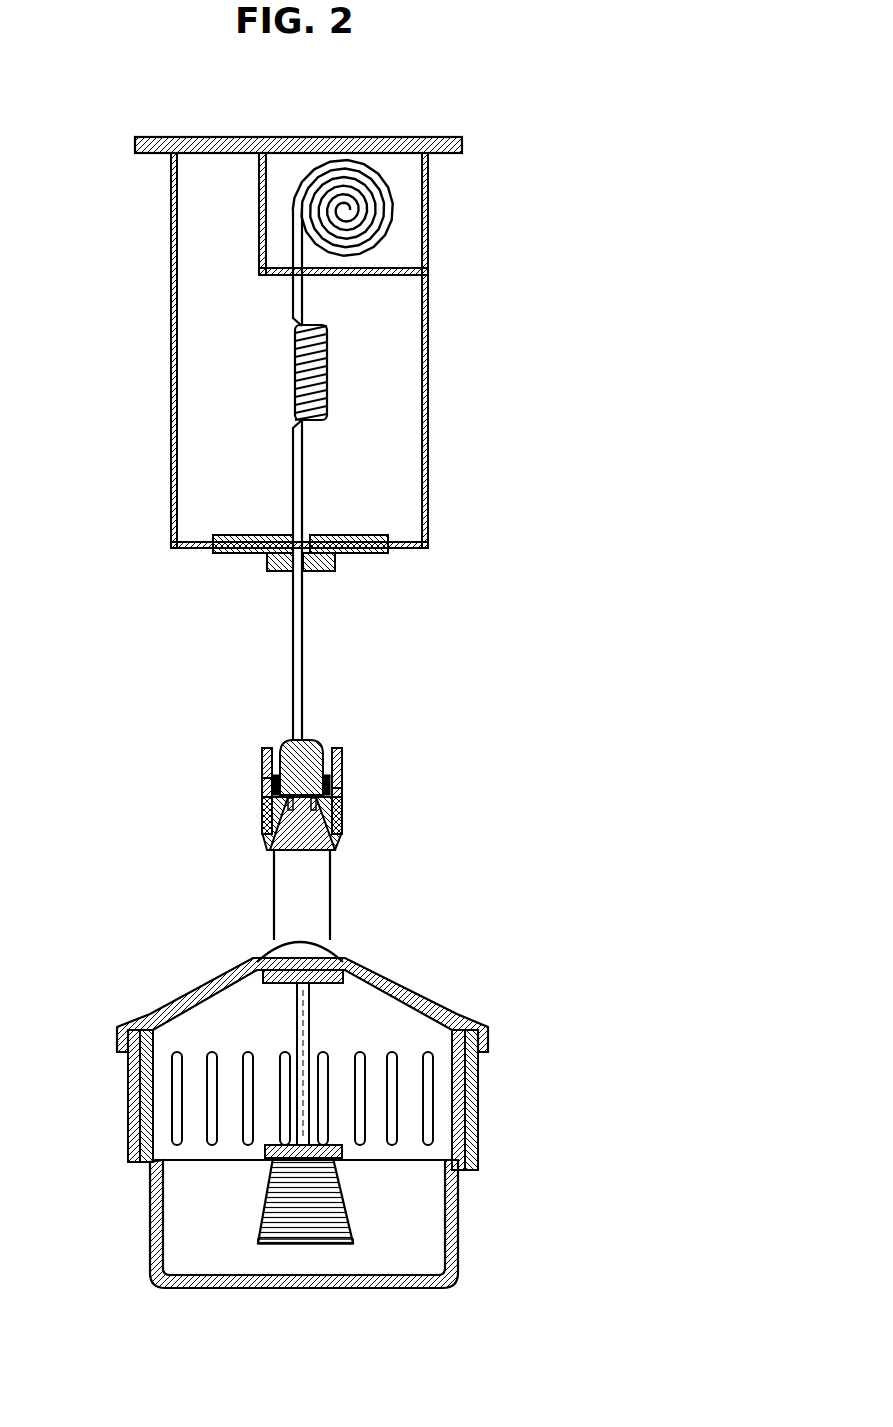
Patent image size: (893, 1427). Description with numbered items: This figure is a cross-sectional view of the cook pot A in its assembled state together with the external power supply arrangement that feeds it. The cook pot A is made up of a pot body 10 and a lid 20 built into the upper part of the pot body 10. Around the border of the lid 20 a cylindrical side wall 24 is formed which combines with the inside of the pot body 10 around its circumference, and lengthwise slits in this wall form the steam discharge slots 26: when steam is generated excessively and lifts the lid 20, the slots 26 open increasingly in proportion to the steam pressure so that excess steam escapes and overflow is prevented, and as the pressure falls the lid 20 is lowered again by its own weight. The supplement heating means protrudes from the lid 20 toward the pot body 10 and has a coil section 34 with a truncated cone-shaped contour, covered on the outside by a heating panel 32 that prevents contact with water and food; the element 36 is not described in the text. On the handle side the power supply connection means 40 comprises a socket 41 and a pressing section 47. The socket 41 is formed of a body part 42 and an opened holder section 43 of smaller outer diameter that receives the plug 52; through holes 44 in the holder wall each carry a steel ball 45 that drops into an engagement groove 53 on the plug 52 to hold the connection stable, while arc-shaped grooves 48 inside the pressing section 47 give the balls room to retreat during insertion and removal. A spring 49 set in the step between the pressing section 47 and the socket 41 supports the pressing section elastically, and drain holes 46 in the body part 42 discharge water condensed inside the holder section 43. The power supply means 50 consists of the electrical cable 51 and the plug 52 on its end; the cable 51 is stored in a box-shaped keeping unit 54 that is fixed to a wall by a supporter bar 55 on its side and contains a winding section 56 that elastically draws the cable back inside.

The pot body 10 is at (458, 1220).
The lid 20 is at (432, 988).
The cylindrical side wall 24 is at (478, 1078).
The steam discharge slots 26 is at (395, 1125).
The heating panel 32 is at (256, 1241).
The coil section 34 is at (265, 1197).
The rod 36 is at (270, 1150).
The power supply connection means 40 is at (200, 722).
The socket 41 is at (216, 823).
The body part 42 is at (262, 820).
The holder section 43 is at (262, 797).
The through hole 44 is at (262, 766).
The steel ball 45 is at (262, 782).
The drain hole 46 is at (331, 851).
The pressing section 47 is at (338, 820).
The arc-shaped groove 48 is at (335, 752).
The spring 49 is at (335, 792).
The power supply means 50 is at (328, 592).
The electrical cable 51 is at (302, 452).
The plug 52 is at (307, 740).
The engagement groove 53 is at (325, 772).
The keeping unit 54 is at (428, 342).
The supporter bar 55 is at (436, 136).
The winding section 56 is at (395, 218).
The cook pot A is at (441, 959).